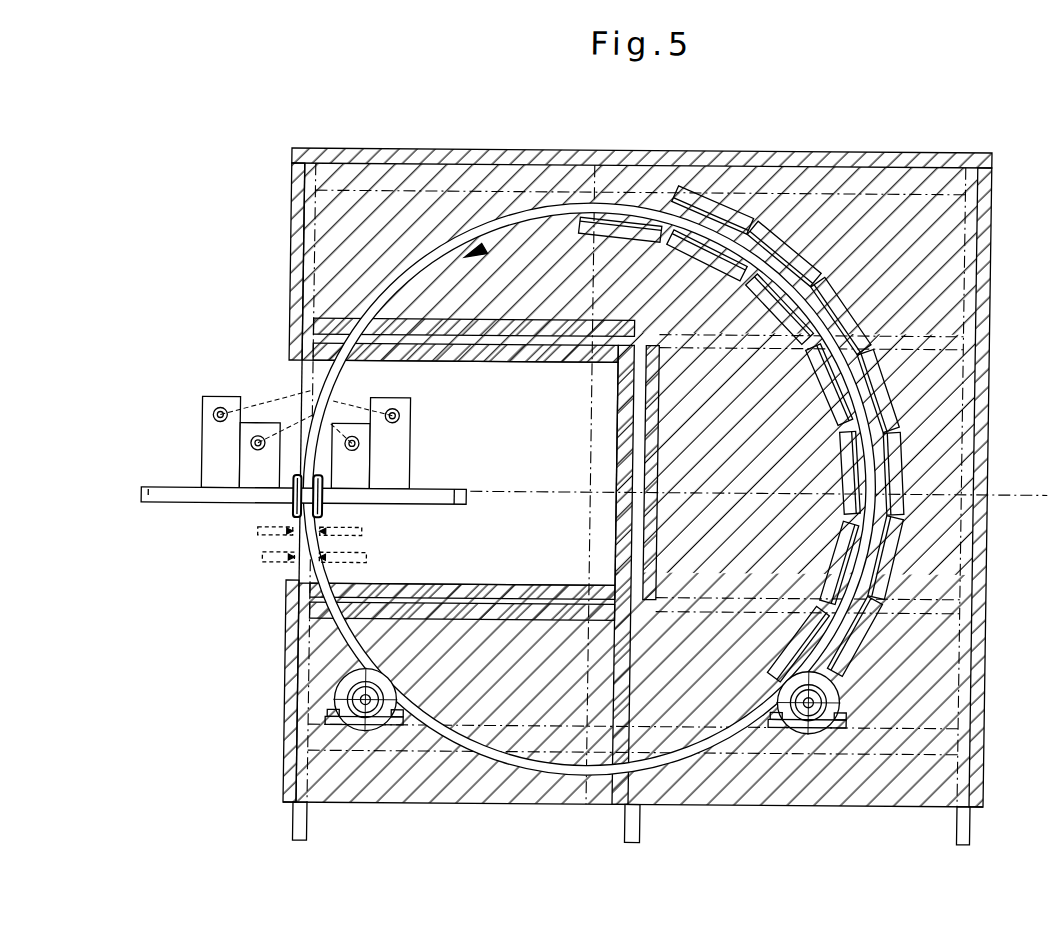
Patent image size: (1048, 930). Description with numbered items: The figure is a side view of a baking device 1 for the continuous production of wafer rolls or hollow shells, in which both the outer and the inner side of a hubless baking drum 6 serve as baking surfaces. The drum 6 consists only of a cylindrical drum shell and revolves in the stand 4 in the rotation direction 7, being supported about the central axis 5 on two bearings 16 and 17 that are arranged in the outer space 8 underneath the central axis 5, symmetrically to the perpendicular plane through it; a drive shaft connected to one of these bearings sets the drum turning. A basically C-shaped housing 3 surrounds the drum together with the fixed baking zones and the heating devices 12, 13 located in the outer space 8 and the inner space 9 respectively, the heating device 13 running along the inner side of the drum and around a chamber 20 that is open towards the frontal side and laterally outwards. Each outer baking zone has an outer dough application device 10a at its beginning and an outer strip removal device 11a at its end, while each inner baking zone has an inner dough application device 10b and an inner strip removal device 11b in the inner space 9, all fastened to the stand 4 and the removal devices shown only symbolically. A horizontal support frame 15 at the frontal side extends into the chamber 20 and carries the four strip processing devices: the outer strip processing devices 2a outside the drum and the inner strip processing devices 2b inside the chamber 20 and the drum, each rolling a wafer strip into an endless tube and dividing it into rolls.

The baking device 1 is at (868, 148).
The outer strip processing device 2a is at (205, 398).
The inner strip processing device 2b is at (414, 397).
The housing 3 is at (987, 307).
The stand 4 is at (974, 825).
The central axis 5 is at (592, 490).
The hubless baking drum 6 is at (511, 203).
The rotation direction 7 is at (484, 247).
The outer space 8 is at (861, 229).
The inner space 9 is at (455, 292).
The outer dough application device 10a is at (268, 552).
The inner dough application device 10b is at (415, 529).
The outer strip removal device 11a is at (315, 390).
The inner strip removal device 11b is at (333, 401).
The heating device 12 is at (787, 383).
The heating device 13 is at (714, 385).
The horizontal support frame 15 is at (469, 490).
The bearing 16 is at (408, 725).
The bearing 17 is at (847, 725).
The chamber 20 is at (492, 542).